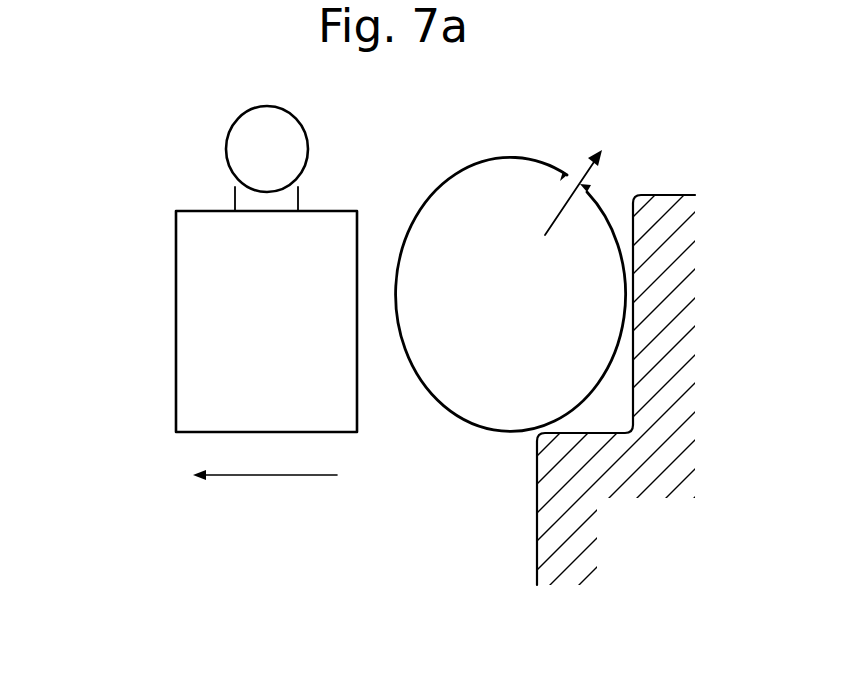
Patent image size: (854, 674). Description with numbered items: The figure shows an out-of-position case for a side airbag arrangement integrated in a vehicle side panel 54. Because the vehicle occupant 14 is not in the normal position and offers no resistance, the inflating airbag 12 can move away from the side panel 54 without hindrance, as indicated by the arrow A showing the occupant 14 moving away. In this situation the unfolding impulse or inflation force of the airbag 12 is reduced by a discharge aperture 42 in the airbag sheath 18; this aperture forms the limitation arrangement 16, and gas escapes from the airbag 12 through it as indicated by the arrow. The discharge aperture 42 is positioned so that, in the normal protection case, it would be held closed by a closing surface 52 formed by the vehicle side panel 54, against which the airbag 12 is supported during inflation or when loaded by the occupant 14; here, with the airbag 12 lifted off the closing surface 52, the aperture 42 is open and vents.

The vehicle occupant 14 is at (142, 287).
The airbag 12 is at (478, 187).
The discharge aperture 42 is at (575, 168).
The limitation arrangement 16 is at (600, 200).
The closing surface 52 is at (637, 260).
The vehicle side panel 54 is at (663, 343).
The airbag sheath 18 is at (465, 432).
The direction of movement A is at (313, 477).